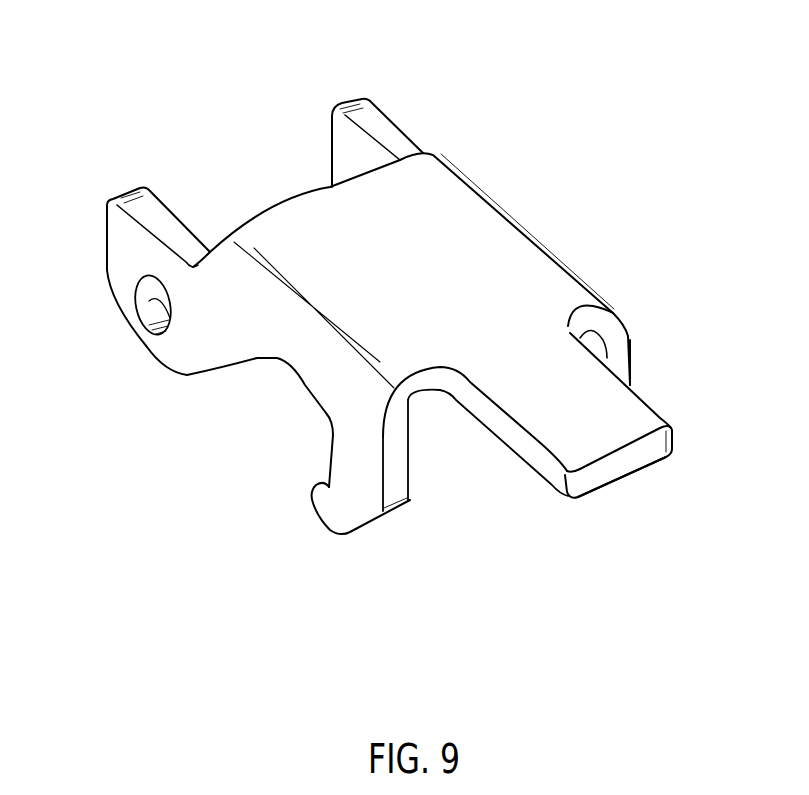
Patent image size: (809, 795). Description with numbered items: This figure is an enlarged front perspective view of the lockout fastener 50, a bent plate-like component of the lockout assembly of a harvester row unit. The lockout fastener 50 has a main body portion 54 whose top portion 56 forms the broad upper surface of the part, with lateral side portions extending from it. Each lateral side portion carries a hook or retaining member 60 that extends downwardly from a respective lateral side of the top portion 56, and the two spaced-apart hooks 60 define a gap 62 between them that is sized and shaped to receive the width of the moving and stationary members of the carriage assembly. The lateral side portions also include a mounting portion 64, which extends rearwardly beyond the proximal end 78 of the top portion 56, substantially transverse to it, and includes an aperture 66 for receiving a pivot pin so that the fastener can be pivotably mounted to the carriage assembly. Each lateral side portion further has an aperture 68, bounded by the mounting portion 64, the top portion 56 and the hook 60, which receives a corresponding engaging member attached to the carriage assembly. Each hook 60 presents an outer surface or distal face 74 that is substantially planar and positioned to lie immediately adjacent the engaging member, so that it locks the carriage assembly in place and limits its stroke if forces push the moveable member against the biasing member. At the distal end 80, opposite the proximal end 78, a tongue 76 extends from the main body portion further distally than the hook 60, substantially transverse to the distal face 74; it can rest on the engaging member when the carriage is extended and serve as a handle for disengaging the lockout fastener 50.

The lockout fastener 50 is at (718, 128).
The main body portion 54 is at (463, 172).
The top portion 56 is at (460, 248).
The hook or retaining member 60 is at (372, 523).
The gap 62 is at (478, 478).
The mounting portion 64 is at (156, 348).
The aperture 66 is at (146, 303).
The aperture 68 is at (250, 430).
The outer surface or distal face 74 is at (397, 477).
The tongue 76 is at (634, 468).
The proximal end 78 is at (72, 130).
The distal end 80 is at (712, 564).